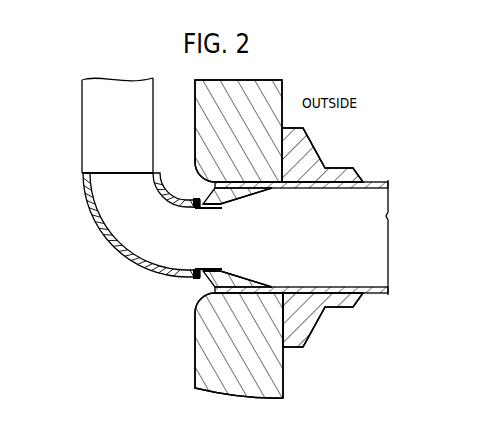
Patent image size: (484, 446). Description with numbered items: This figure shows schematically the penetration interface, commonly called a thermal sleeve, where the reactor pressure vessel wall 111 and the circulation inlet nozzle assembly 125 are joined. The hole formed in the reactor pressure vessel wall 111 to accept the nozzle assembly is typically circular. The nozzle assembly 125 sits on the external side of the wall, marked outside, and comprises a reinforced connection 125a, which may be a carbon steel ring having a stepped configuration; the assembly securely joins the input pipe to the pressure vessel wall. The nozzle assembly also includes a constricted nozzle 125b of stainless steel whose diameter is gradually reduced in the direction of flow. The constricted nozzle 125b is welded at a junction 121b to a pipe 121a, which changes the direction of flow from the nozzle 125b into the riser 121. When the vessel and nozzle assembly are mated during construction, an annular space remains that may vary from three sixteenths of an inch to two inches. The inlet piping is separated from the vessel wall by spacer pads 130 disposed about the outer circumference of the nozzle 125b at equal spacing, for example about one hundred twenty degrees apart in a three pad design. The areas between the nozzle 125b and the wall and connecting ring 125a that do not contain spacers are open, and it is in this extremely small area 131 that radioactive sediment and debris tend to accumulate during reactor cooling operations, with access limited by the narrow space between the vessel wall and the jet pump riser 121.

The reactor pressure vessel wall 111 is at (203, 373).
The riser 121 is at (152, 195).
The pipe 121a is at (178, 197).
The junction 121b is at (189, 208).
The circulation inlet nozzle assembly 125 is at (295, 214).
The reinforced connection 125a is at (338, 166).
The constricted nozzle 125b is at (258, 202).
The spacer pads 130 is at (279, 131).
The area 131 is at (282, 297).